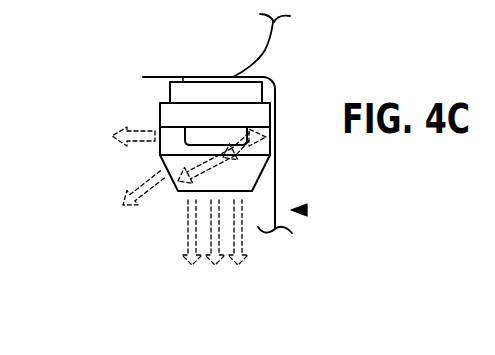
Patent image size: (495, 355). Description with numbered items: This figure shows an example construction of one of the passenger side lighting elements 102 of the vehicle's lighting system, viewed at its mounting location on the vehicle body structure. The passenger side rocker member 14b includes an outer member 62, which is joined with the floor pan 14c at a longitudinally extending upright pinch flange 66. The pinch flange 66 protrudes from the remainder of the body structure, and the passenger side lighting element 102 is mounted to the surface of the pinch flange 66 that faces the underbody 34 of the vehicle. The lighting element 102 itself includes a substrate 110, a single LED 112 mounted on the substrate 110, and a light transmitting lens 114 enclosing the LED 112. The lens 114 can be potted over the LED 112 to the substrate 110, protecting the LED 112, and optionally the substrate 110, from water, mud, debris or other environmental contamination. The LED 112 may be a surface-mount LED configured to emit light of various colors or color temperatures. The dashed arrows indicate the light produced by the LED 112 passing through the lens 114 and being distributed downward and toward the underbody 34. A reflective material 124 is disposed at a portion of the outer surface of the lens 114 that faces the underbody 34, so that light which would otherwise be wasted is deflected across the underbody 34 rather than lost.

The passenger side rocker member 14b is at (326, 45).
The outer member 62 is at (273, 35).
The floor pan 14c is at (276, 97).
The underbody 34 is at (307, 208).
The pinch flange 66 is at (199, 77).
The passenger side lighting element 102 is at (97, 0).
The substrate 110 is at (161, 103).
The LED 112 is at (187, 138).
The light transmitting lens 114 is at (177, 191).
The reflective material 124 is at (276, 142).